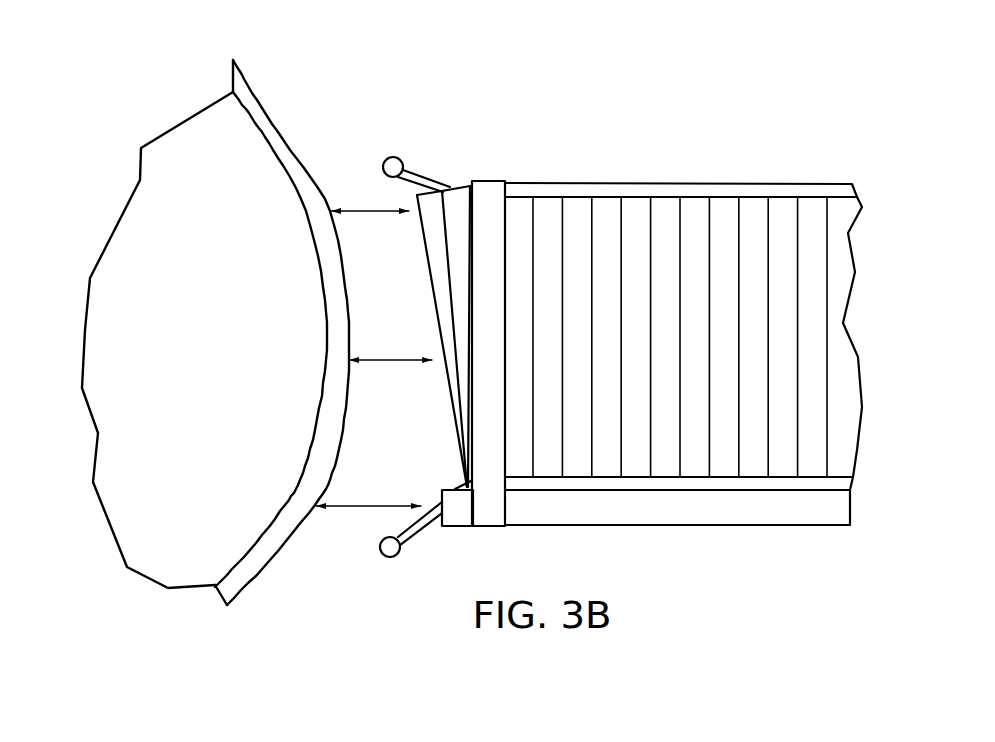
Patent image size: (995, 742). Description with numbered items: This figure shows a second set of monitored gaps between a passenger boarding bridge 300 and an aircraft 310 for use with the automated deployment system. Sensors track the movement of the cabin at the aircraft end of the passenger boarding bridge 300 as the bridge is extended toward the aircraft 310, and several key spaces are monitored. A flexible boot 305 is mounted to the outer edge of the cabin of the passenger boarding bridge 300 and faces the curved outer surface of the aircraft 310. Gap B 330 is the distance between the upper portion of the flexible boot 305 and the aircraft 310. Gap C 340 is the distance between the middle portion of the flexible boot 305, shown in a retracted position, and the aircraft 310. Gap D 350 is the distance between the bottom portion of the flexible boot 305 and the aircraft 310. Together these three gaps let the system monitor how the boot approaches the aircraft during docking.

The passenger boarding bridge 300 is at (715, 185).
The flexible boot 305 is at (457, 187).
The aircraft 310 is at (280, 108).
The Gap B 330 is at (372, 213).
The Gap C 340 is at (387, 360).
The Gap D 350 is at (368, 508).